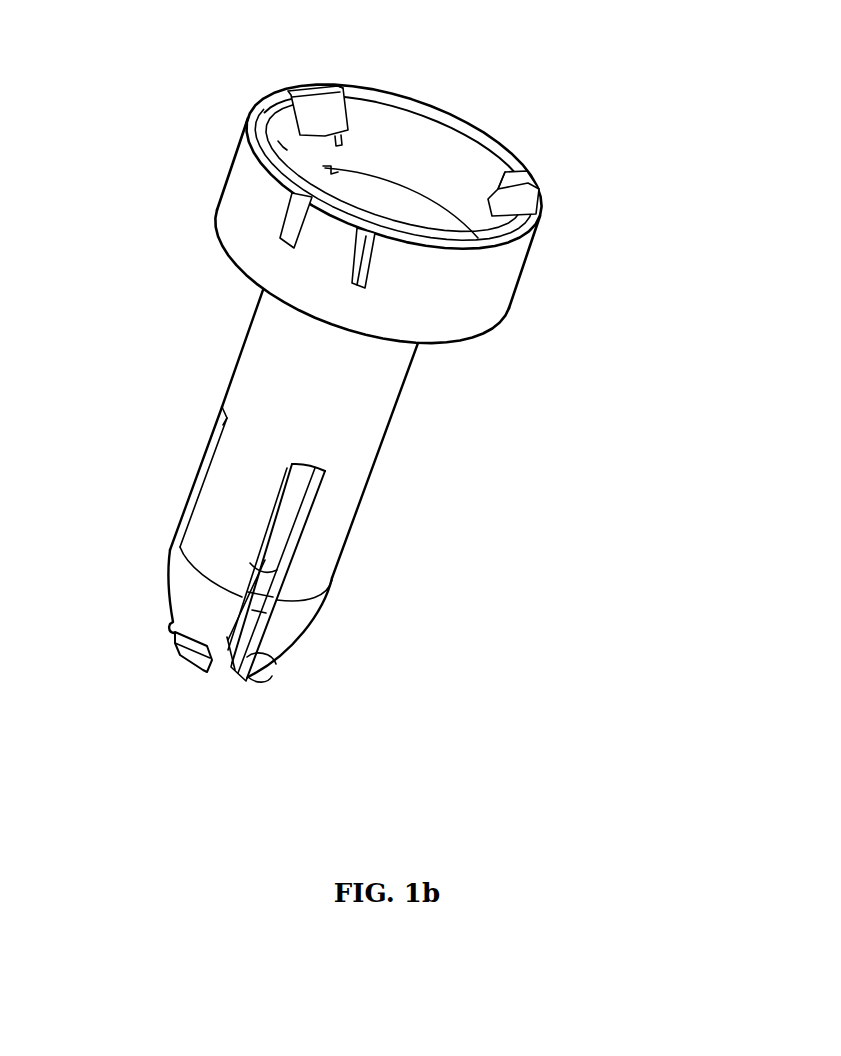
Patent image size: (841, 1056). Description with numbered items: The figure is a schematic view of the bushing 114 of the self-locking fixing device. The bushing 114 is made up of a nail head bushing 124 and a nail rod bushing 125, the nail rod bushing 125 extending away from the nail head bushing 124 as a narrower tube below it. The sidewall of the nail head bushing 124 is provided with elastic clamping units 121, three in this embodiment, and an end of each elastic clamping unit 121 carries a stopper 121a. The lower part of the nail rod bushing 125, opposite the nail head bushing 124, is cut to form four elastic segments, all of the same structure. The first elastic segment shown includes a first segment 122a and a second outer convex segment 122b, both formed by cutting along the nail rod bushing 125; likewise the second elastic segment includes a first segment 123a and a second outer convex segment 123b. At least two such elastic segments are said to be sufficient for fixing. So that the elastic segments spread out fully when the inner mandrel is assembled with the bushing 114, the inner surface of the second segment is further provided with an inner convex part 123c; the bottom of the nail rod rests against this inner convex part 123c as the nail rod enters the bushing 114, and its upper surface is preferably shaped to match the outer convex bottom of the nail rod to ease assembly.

The bushing 114 is at (568, 318).
The elastic clamping unit 121 is at (533, 187).
The stopper 121a is at (310, 115).
The nail head bushing 124 is at (387, 128).
The nail rod bushing 125 is at (320, 417).
The first segment 122a is at (235, 500).
The second outer convex segment 122b is at (192, 583).
The first segment 123a is at (310, 560).
The second outer convex segment 123b is at (297, 623).
The inner convex part 123c is at (237, 673).